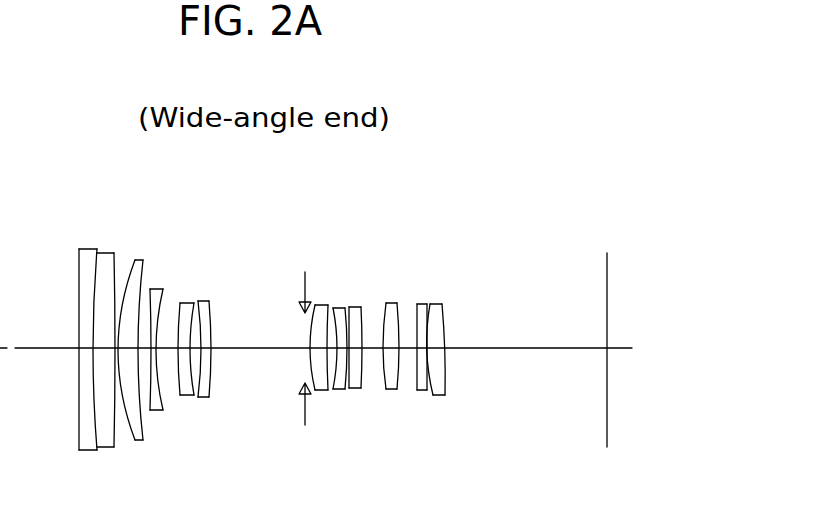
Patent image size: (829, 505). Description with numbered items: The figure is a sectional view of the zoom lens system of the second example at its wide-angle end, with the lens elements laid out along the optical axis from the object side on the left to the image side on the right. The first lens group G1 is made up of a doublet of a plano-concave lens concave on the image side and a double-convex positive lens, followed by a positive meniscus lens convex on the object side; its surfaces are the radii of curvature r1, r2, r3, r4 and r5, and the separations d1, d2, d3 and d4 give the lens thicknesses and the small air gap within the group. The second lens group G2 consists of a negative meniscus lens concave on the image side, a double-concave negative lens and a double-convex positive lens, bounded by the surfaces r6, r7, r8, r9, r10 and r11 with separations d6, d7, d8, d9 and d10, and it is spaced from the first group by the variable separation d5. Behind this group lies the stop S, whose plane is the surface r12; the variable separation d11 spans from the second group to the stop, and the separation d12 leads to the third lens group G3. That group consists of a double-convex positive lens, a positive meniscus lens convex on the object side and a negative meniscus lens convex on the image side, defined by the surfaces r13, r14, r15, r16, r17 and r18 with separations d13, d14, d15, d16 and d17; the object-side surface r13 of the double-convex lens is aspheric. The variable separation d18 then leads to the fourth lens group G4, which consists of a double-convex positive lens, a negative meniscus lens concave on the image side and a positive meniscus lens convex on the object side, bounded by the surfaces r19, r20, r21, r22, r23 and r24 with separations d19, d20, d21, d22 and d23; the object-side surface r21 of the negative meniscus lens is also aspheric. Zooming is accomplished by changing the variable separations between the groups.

The first lens group G1 is at (142, 183).
The second lens group G2 is at (203, 183).
The stop S is at (313, 183).
The third lens group G3 is at (362, 183).
The fourth lens group G4 is at (450, 183).
The lens surface radius of curvature r1 is at (79, 270).
The lens surface radius of curvature r2 is at (95, 267).
The lens surface radius of curvature r3 is at (114, 255).
The lens surface radius of curvature r4 is at (127, 268).
The lens surface radius of curvature r5 is at (145, 280).
The lens surface radius of curvature r6 is at (153, 290).
The lens surface radius of curvature r7 is at (165, 300).
The lens surface radius of curvature r8 is at (180, 305).
The lens surface radius of curvature r9 is at (196, 304).
The lens surface radius of curvature r10 is at (209, 301).
The lens surface radius of curvature r11 is at (212, 312).
The stop surface r12 is at (300, 318).
The lens surface radius of curvature r13 is at (315, 305).
The lens surface radius of curvature r14 is at (328, 308).
The lens surface radius of curvature r15 is at (333, 308).
The lens surface radius of curvature r16 is at (345, 308).
The lens surface radius of curvature r17 is at (349, 308).
The lens surface radius of curvature r18 is at (362, 307).
The lens surface radius of curvature r19 is at (386, 305).
The lens surface radius of curvature r20 is at (399, 305).
The lens surface radius of curvature r21 is at (417, 305).
The lens surface radius of curvature r22 is at (428, 305).
The lens surface radius of curvature r23 is at (434, 306).
The lens surface radius of curvature r24 is at (443, 307).
The lens surface separation d1 is at (79, 370).
The lens surface separation d2 is at (103, 365).
The lens surface separation d3 is at (118, 385).
The lens surface separation d4 is at (128, 418).
The lens surface separation d5 is at (147, 400).
The lens surface separation d6 is at (158, 412).
The lens surface separation d7 is at (166, 365).
The lens surface separation d8 is at (186, 397).
The lens surface separation d9 is at (197, 397).
The lens surface separation d10 is at (208, 378).
The lens surface separation d11 is at (251, 365).
The lens surface separation d12 is at (311, 396).
The lens surface separation d13 is at (320, 393).
The lens surface separation d14 is at (330, 396).
The lens surface separation d15 is at (338, 392).
The lens surface separation d16 is at (347, 392).
The lens surface separation d17 is at (356, 390).
The lens surface separation d18 is at (373, 352).
The lens surface separation d19 is at (394, 390).
The lens surface separation d20 is at (408, 378).
The lens surface separation d21 is at (421, 392).
The lens surface separation d22 is at (426, 396).
The lens surface separation d23 is at (439, 384).